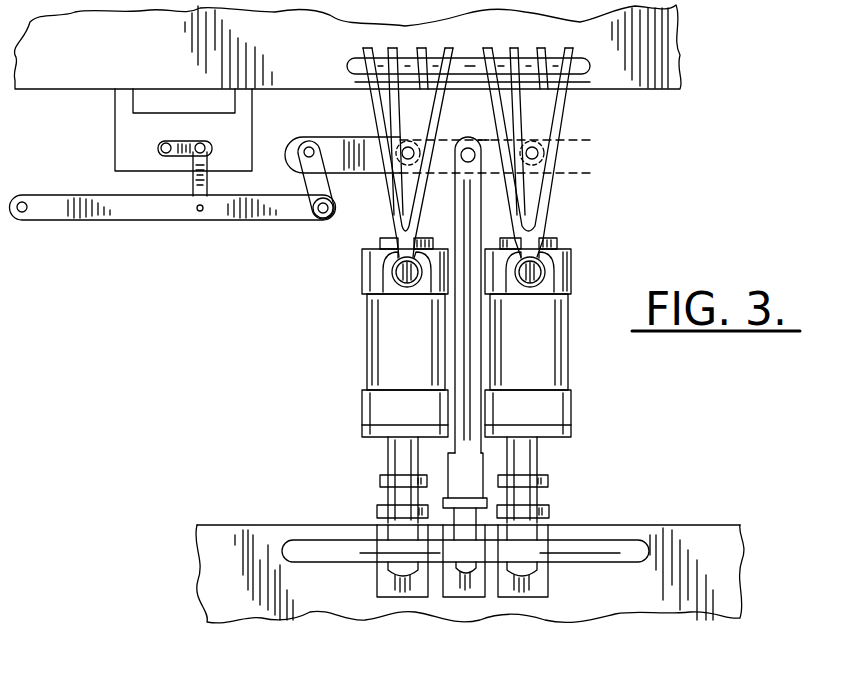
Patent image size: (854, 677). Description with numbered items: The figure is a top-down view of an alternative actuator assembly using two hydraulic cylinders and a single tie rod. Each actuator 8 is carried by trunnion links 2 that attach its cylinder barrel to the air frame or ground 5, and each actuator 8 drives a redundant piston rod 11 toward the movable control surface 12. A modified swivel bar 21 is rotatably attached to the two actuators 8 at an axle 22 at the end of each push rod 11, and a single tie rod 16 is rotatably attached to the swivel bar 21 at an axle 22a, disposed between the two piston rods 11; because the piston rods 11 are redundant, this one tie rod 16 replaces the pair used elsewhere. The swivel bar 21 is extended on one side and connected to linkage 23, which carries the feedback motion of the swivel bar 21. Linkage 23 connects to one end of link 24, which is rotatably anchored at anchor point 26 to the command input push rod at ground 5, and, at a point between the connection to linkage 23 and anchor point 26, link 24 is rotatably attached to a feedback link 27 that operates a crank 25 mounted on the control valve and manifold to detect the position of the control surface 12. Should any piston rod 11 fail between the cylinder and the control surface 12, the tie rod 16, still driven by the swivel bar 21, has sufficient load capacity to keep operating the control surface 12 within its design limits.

The trunnion link 2 is at (448, 102).
The ground 5 is at (45, 89).
The actuator 8 is at (368, 326).
The piston rod 11 is at (388, 232).
The control surface 12 is at (666, 525).
The tie rod 16 is at (470, 352).
The swivel bar 21 is at (338, 176).
The axle 22 is at (398, 140).
The axle 22a is at (478, 143).
The linkage 23 is at (300, 222).
The link 24 is at (165, 222).
The crank 25 is at (182, 142).
The anchor point 26 is at (12, 195).
The feedback link 27 is at (207, 182).